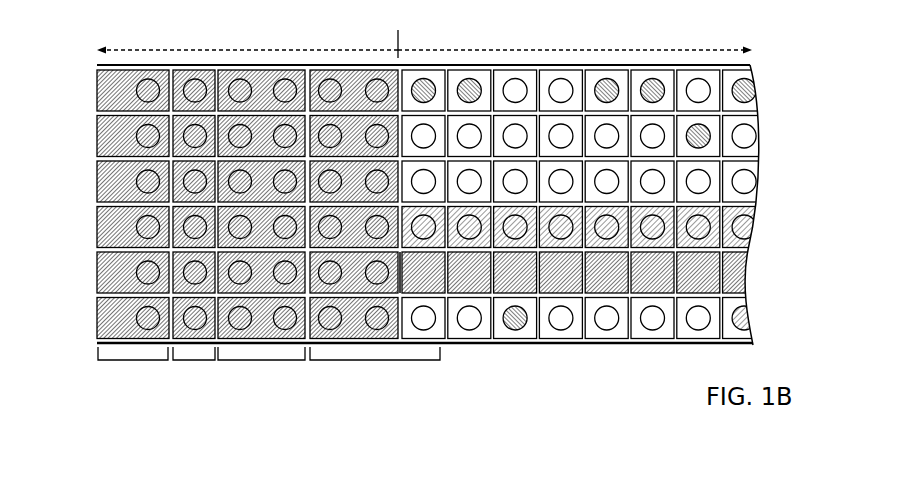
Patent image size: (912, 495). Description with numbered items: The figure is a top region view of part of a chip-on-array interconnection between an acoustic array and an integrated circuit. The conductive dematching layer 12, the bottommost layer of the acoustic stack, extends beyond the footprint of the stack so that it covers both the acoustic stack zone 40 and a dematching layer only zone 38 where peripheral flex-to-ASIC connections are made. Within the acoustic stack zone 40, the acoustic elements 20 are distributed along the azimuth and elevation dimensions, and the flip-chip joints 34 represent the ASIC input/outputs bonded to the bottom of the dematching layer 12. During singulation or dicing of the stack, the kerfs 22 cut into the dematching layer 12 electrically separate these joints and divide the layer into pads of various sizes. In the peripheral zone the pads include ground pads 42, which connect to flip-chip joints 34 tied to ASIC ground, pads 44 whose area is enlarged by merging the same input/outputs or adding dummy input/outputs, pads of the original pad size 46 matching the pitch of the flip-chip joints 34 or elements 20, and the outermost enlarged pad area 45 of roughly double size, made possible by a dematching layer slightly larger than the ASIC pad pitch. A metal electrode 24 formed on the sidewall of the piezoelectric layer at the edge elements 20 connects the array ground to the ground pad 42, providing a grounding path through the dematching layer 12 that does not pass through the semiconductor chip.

The dematching layer 12 is at (113, 184).
The elements 20 is at (734, 285).
The kerfs 22 is at (722, 151).
The metal electrode 24 is at (400, 283).
The flip-chip joints 34 is at (746, 227).
The dematching layer only zone 38 is at (247, 33).
The acoustic stack zone 40 is at (582, 182).
The ground pads 42 is at (375, 373).
The enlarged pads 44 is at (262, 362).
The enlarged pad area 45 is at (132, 362).
The original pad size 46 is at (197, 362).